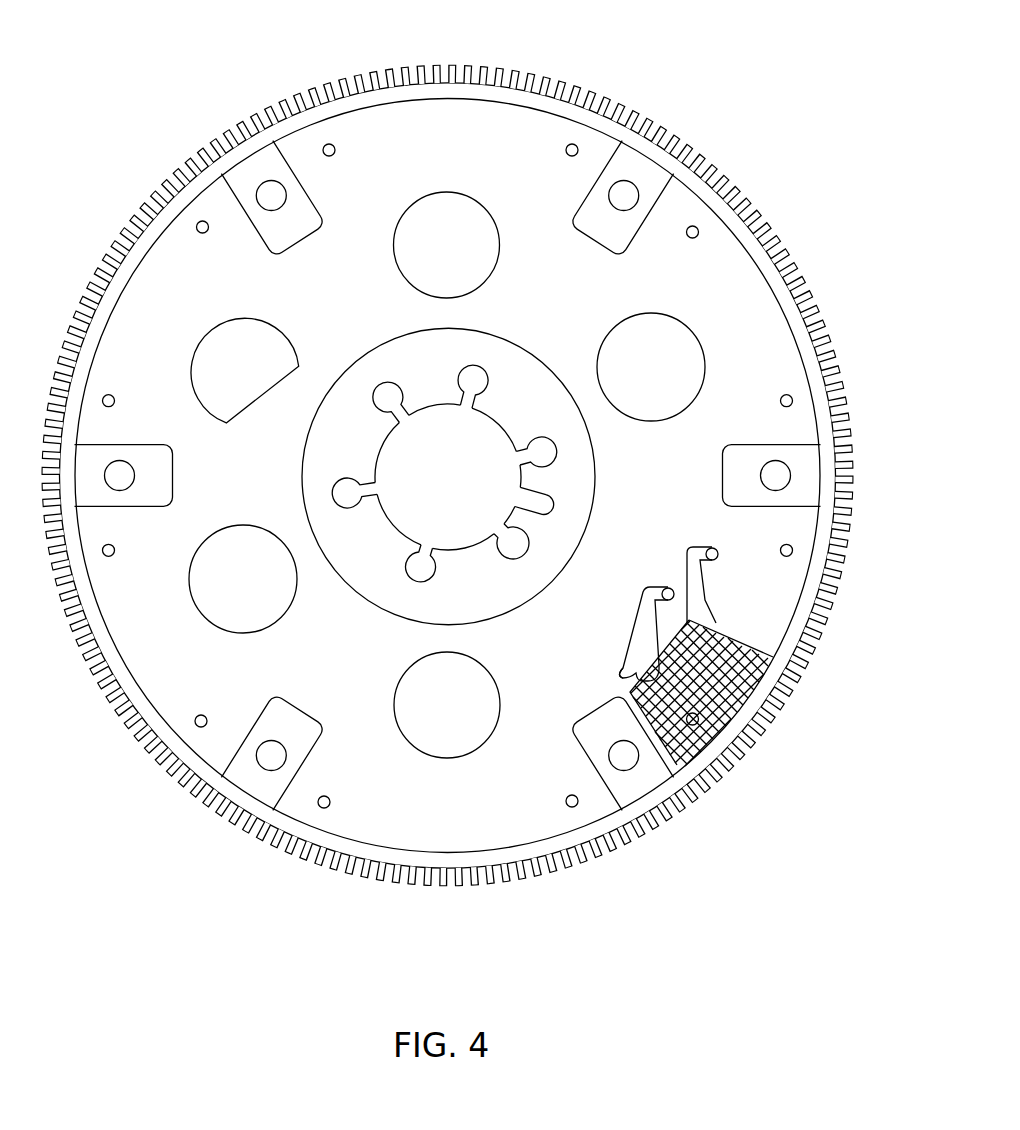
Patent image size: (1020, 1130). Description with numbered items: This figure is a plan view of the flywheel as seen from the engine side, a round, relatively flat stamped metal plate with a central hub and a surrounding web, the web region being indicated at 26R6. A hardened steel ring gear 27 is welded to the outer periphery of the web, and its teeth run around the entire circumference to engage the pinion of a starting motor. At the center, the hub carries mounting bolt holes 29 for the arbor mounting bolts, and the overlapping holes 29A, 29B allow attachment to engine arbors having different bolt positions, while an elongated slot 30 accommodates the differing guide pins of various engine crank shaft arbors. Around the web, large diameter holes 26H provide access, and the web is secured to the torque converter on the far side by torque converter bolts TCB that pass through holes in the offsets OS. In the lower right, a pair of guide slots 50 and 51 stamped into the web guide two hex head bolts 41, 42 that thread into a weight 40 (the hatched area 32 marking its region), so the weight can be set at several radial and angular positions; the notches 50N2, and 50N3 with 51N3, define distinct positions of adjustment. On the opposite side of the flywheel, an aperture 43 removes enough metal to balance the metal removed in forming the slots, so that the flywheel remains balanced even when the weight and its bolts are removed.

The ring gear 27 is at (442, 858).
The flywheel ring 26R6 is at (627, 847).
The torque converter bolts TCB is at (628, 170).
The offsets OS is at (623, 197).
The large diameter holes 26H is at (455, 228).
The aperture 43 is at (213, 370).
The mounting bolt holes 29 is at (425, 550).
The overlapping hole 29A is at (467, 368).
The overlapping hole 29B is at (462, 395).
The elongated slot 30 is at (535, 500).
The hatched region 32 is at (712, 755).
The guide slot 50 is at (637, 640).
The notch 50N3 is at (674, 596).
The notch 50N2 is at (627, 668).
The guide slot 51 is at (695, 590).
The notch 51N3 is at (718, 556).
The hex head bolt 42 is at (740, 686).
The hex head bolt 41 is at (717, 705).
The weight 40 is at (752, 712).